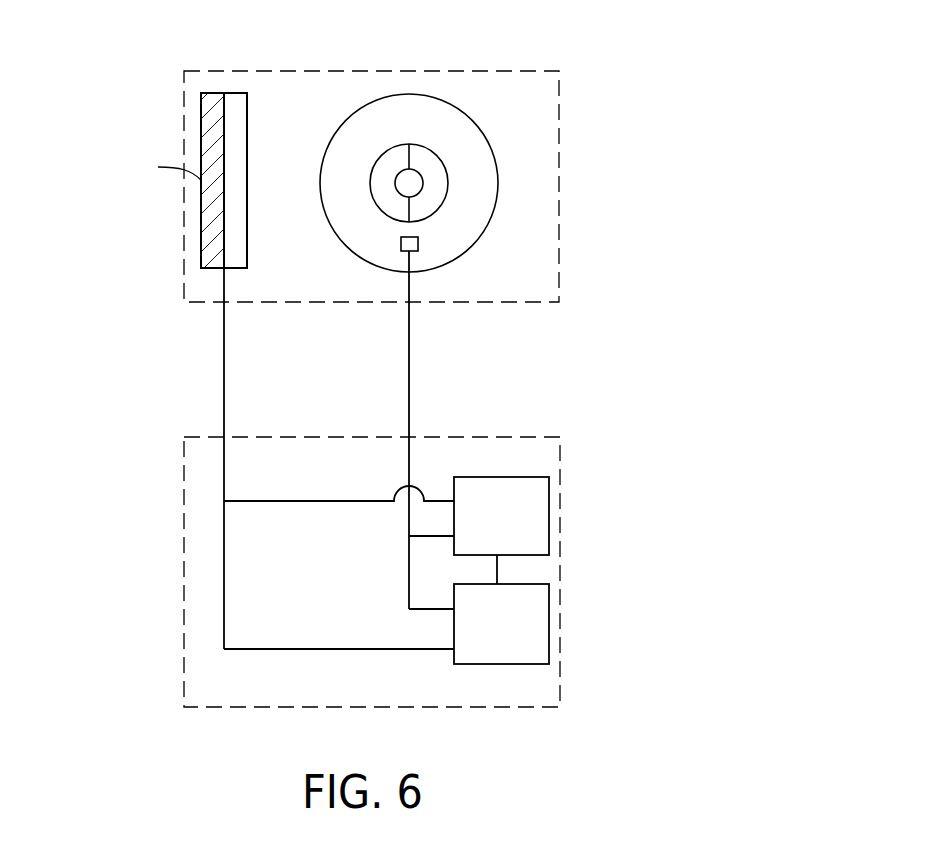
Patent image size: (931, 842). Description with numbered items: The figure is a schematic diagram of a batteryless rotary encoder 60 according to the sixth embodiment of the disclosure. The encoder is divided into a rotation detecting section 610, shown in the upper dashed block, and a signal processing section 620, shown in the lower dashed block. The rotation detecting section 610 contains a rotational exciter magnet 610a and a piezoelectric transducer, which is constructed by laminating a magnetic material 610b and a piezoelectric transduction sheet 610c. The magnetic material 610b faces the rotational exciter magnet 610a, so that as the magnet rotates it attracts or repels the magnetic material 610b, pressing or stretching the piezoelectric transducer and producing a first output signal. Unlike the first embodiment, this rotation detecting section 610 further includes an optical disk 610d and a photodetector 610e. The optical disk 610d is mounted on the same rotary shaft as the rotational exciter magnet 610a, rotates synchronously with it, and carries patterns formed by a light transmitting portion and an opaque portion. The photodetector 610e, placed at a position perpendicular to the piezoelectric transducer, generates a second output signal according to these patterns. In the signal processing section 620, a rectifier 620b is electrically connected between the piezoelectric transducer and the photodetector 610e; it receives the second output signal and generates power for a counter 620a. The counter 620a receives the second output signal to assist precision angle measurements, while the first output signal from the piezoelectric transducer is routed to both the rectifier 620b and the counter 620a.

The batteryless rotary encoder 60 is at (773, 55).
The rotation detecting section 610 is at (184, 122).
The rotational exciter magnet 610a is at (385, 150).
The magnetic material 610b is at (235, 107).
The piezoelectric transduction sheet 610c is at (211, 100).
The optical disk 610d is at (432, 97).
The photodetector 610e is at (418, 249).
The signal processing section 620 is at (184, 502).
The counter 620a is at (549, 584).
The rectifier 620b is at (549, 477).